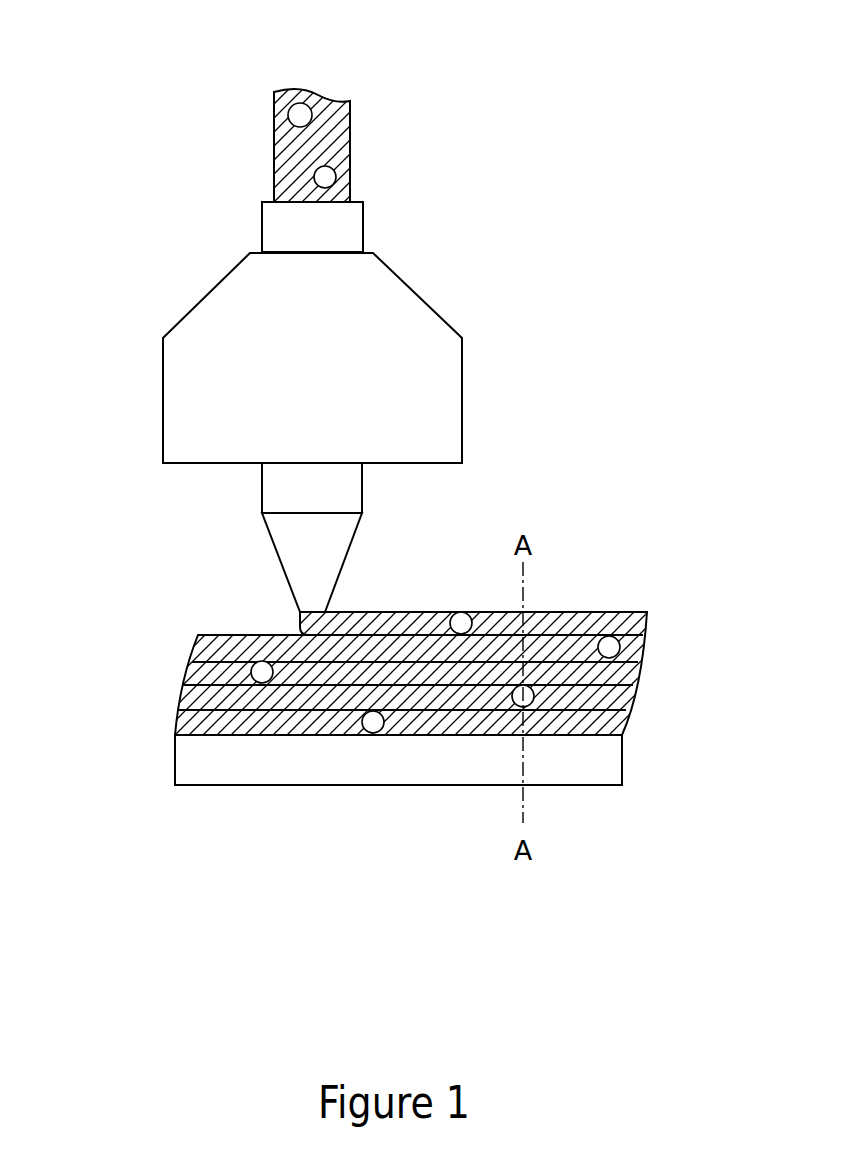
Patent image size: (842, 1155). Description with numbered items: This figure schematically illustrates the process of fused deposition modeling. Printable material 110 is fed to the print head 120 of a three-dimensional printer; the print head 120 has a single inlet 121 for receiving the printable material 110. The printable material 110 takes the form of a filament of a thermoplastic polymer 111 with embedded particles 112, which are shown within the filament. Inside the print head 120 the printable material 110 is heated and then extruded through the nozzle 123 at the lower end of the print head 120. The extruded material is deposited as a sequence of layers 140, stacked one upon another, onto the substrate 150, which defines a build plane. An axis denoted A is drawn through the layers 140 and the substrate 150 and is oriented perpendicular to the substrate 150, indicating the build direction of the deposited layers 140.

The printable material 110 is at (250, 165).
The thermoplastic polymer 111 is at (352, 111).
The embedded particles 112 is at (325, 177).
The print head 120 is at (281, 383).
The inlet 121 is at (283, 232).
The nozzle 123 is at (302, 557).
The layers 140 is at (658, 612).
The substrate 150 is at (198, 762).